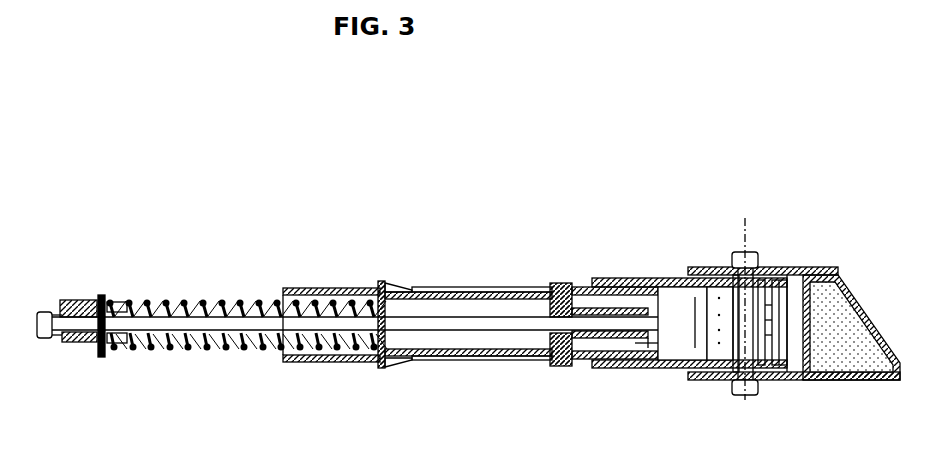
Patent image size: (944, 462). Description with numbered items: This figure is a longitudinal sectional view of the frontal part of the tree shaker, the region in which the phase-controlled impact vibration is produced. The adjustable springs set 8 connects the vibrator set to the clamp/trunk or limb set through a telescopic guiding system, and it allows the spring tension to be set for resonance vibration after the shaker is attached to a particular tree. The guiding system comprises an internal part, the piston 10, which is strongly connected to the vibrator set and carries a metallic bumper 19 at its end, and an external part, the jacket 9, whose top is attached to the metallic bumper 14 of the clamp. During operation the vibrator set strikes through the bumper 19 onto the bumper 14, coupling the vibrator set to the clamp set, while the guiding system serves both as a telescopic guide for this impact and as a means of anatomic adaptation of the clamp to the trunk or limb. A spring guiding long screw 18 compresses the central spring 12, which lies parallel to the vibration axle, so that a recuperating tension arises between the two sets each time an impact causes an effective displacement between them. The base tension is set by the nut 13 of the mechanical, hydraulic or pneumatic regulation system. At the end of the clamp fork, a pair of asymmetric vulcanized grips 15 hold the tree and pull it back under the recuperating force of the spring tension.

The adjustable springs set 8 is at (132, 348).
The jacket 9 is at (517, 289).
The piston 10 is at (407, 353).
The central spring 12 is at (103, 294).
The nut 13 is at (603, 310).
The metallic bumper of the clamp 14 is at (565, 287).
The asymmetric vulcanized grips 15 is at (865, 265).
The spring guiding long screw 18 is at (500, 323).
The metallic bumper 19 is at (550, 363).